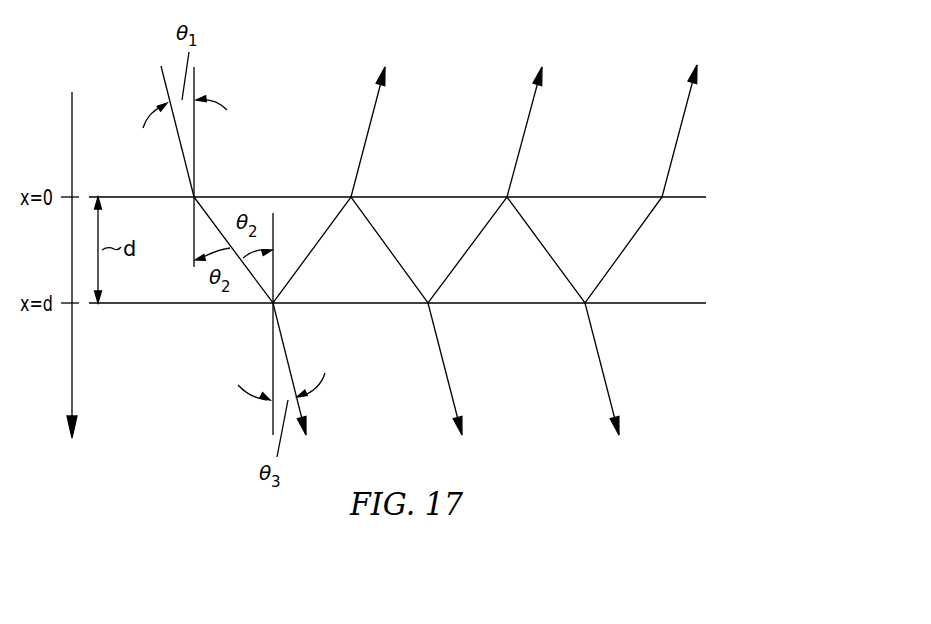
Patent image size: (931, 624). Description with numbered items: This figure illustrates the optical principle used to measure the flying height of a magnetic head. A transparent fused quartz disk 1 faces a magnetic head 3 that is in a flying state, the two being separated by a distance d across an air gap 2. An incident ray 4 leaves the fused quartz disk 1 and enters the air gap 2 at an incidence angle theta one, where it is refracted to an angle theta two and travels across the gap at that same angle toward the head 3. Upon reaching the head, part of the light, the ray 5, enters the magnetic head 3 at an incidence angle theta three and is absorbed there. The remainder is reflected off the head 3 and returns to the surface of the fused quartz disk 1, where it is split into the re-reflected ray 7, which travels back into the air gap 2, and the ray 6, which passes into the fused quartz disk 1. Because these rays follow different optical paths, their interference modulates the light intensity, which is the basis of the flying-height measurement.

The fused quartz disk 1 is at (724, 144).
The air gap 2 is at (724, 264).
The magnetic head 3 is at (724, 387).
The incident ray 4 is at (164, 80).
The ray entering the head 5 is at (287, 360).
The ray entering the fused quartz disk 6 is at (372, 125).
The re-reflected ray 7 is at (383, 237).